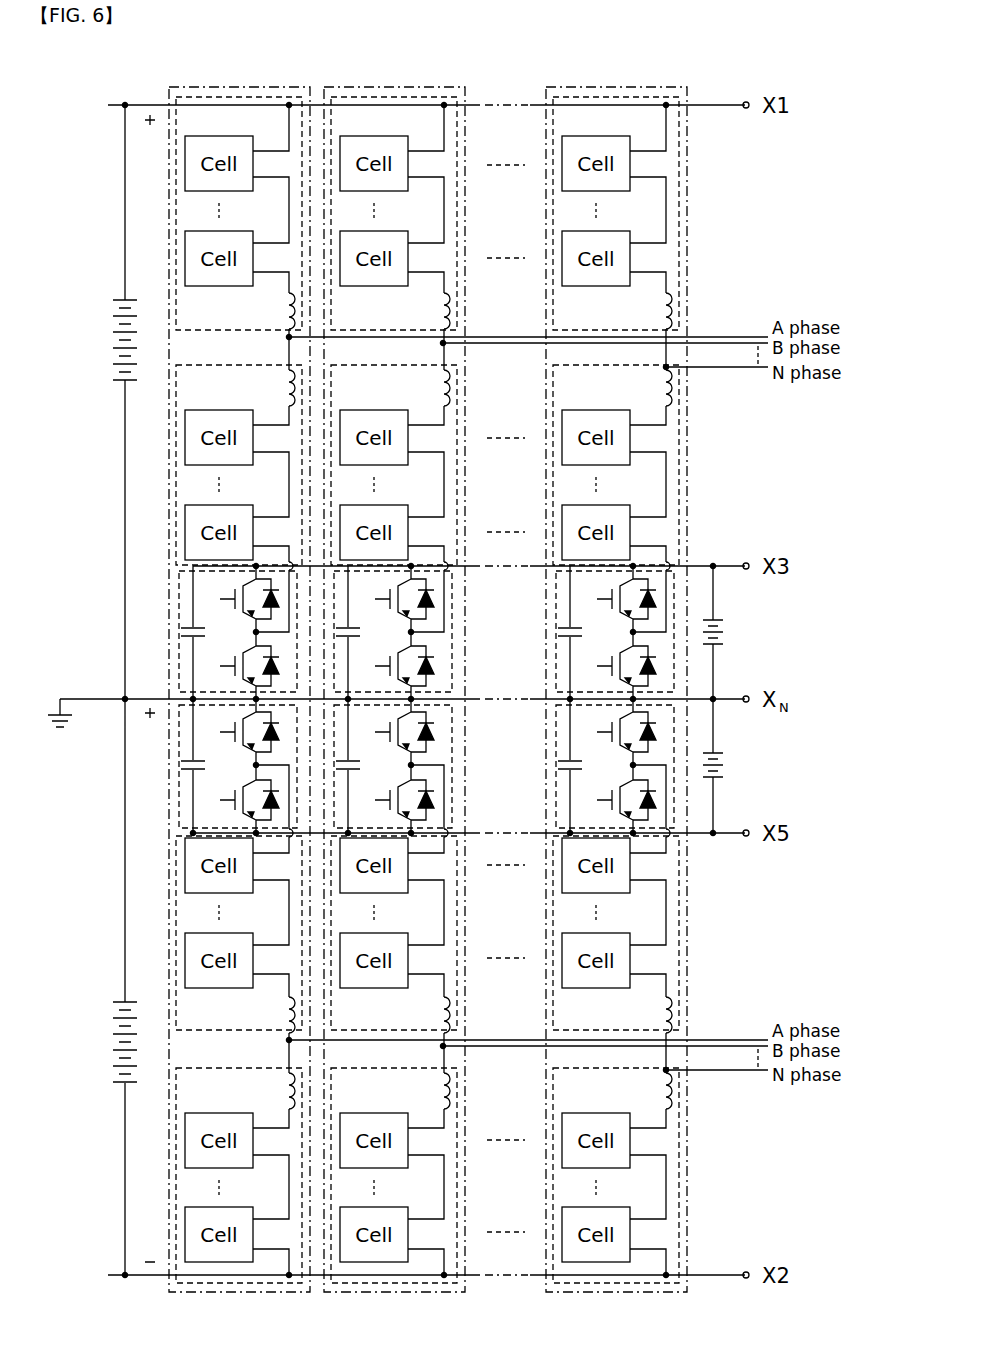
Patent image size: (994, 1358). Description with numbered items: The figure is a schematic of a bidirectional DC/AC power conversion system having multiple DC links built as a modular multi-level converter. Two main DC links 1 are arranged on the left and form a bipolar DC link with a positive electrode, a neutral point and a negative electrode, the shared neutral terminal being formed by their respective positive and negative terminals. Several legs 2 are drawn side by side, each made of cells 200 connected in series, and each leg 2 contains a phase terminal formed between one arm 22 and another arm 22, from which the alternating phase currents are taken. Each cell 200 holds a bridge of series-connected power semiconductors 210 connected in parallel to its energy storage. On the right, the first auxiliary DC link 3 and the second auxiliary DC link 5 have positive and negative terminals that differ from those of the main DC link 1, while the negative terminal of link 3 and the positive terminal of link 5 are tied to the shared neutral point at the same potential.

The main DC link 1 is at (90, 312).
The leg 2 is at (197, 87).
The arm 22 is at (176, 134).
The cell 200 is at (185, 258).
The power semiconductor 210 is at (216, 587).
The first auxiliary DC link 3 is at (766, 630).
The second auxiliary DC link 5 is at (766, 764).